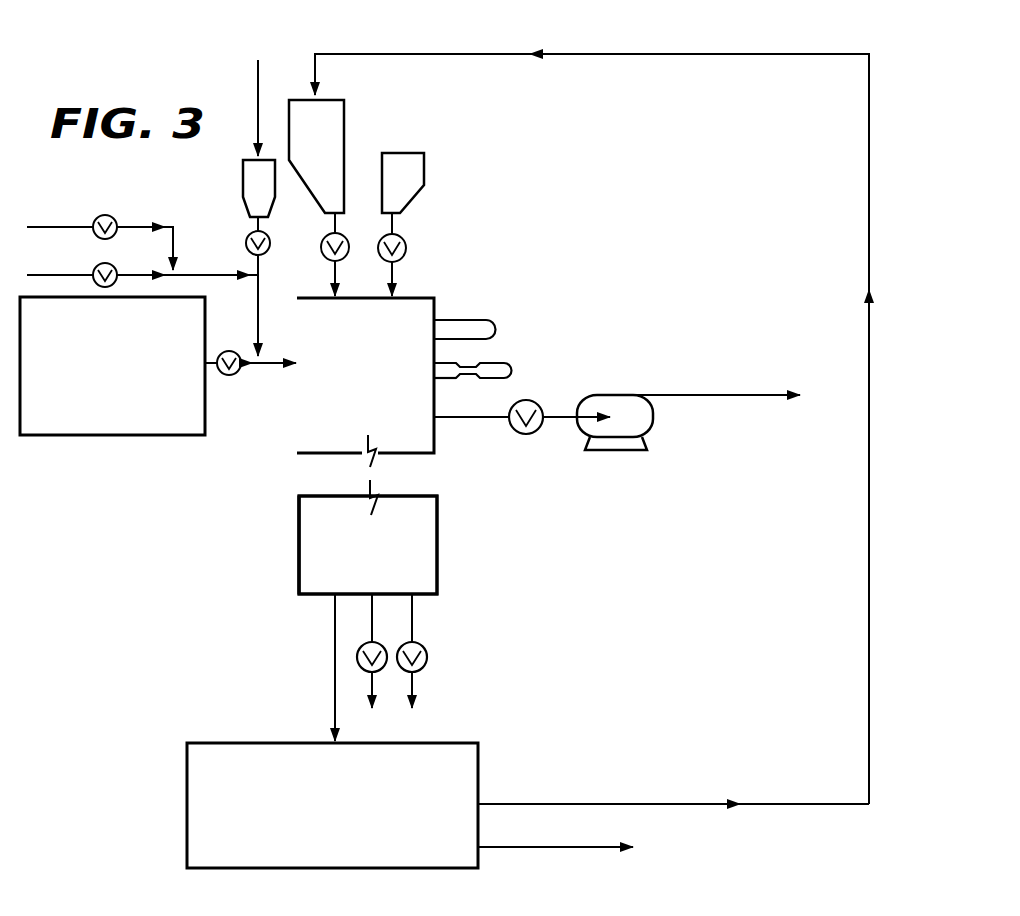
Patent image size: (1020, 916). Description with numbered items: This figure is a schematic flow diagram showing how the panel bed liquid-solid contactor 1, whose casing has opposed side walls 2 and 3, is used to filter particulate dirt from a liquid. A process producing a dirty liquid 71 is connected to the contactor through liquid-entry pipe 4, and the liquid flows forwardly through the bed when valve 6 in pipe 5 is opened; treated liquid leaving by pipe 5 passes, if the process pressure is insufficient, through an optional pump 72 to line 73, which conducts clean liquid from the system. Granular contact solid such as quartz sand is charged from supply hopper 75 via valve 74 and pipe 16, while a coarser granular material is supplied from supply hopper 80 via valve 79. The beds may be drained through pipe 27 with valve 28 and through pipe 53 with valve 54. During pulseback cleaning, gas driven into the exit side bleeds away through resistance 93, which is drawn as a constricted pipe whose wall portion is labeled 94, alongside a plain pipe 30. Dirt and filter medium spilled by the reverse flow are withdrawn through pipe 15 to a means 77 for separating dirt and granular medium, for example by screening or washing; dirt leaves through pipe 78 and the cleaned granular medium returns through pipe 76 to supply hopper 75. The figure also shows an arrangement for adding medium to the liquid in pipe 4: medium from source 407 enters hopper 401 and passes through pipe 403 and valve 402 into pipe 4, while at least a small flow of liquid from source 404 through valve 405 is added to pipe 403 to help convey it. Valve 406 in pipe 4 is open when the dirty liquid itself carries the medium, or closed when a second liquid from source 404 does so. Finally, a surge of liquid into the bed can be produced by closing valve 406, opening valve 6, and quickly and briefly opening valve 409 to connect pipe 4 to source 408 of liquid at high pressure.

The panel bed liquid-solid contactor 1 is at (296, 519).
The side wall 2 is at (440, 573).
The side wall 3 is at (300, 576).
The liquid-entry pipe 4 is at (267, 365).
The liquid exit pipe 5 is at (476, 418).
The valve 6 is at (524, 434).
The pipe 15 is at (333, 650).
The pipe 16 is at (336, 267).
The pipe 27 is at (370, 618).
The valve 28 is at (357, 690).
The pipe 30 is at (482, 331).
The pipe 53 is at (415, 622).
The valve 54 is at (427, 661).
The process producing a dirty liquid 71 is at (113, 436).
The pump 72 is at (605, 400).
The line 73 is at (730, 395).
The valve 74 is at (343, 238).
The supply hopper 75 is at (344, 124).
The pipe 76 is at (470, 55).
The means for separating dirt and granular medium 77 is at (187, 768).
The pipe 78 is at (582, 830).
The valve 79 is at (406, 250).
The supply hopper 80 is at (424, 173).
The resistance 93 is at (470, 362).
The pipe lower wall 94 is at (448, 379).
The hopper 401 is at (243, 180).
The valve 402 is at (271, 247).
The pipe 403 is at (259, 298).
The source of liquid 404 is at (75, 226).
The valve 405 is at (101, 216).
The valve 406 is at (229, 376).
The source of medium 407 is at (258, 86).
The source of liquid at high pressure 408 is at (62, 274).
The valve 409 is at (108, 264).